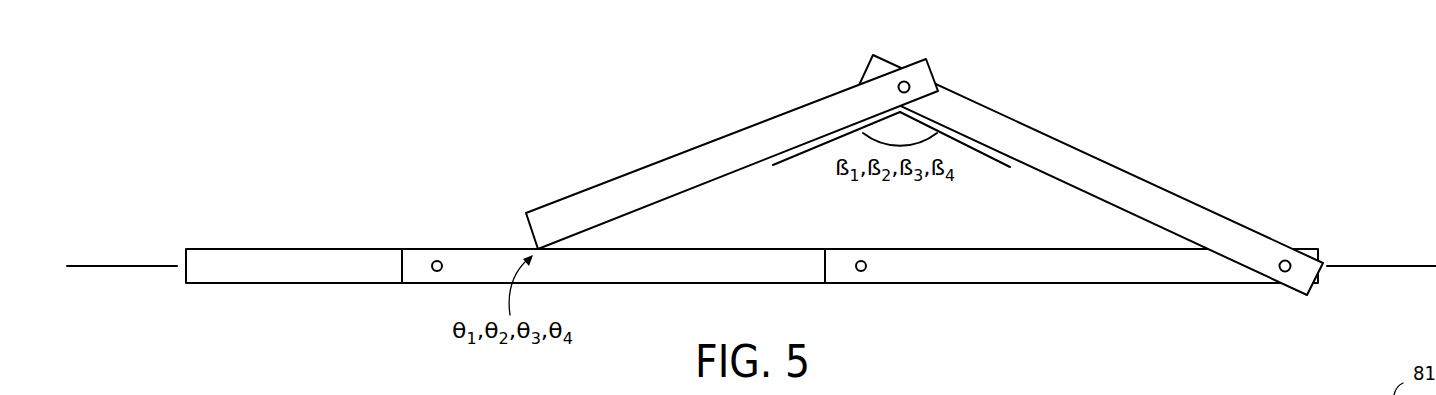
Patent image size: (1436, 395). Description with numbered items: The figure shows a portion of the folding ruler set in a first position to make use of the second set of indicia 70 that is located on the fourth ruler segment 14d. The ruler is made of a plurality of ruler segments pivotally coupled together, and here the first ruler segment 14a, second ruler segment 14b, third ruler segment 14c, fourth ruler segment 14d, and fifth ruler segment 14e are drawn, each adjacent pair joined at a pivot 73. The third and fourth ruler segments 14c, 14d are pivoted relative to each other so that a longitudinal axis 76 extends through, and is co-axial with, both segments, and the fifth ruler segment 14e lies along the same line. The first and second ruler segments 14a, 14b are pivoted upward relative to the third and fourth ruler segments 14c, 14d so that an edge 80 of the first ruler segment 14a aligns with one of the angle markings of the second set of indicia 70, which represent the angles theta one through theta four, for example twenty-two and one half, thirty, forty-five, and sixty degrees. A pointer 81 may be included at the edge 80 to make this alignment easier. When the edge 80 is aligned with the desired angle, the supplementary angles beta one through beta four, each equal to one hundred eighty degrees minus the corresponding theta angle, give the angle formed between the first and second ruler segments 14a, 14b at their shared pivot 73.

The first ruler segment 14a is at (692, 160).
The second ruler segment 14b is at (1115, 175).
The third ruler segment 14c is at (1007, 267).
The fourth ruler segment 14d is at (644, 268).
The fifth ruler segment 14e is at (285, 268).
The second set of indicia 70 is at (507, 182).
The pivot pin 73 is at (436, 261).
The longitudinal axis 76 is at (1382, 268).
The edge 80 is at (540, 249).
The pointer 81 is at (538, 247).